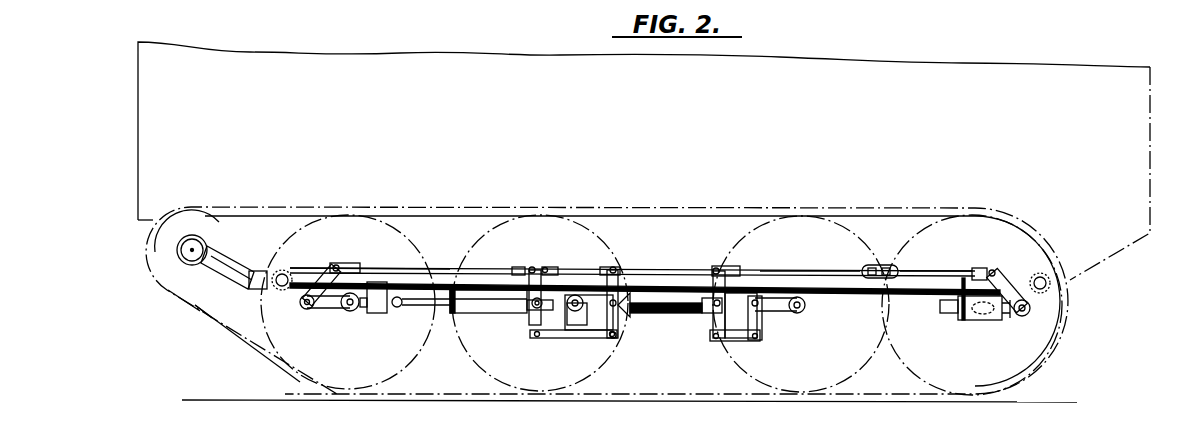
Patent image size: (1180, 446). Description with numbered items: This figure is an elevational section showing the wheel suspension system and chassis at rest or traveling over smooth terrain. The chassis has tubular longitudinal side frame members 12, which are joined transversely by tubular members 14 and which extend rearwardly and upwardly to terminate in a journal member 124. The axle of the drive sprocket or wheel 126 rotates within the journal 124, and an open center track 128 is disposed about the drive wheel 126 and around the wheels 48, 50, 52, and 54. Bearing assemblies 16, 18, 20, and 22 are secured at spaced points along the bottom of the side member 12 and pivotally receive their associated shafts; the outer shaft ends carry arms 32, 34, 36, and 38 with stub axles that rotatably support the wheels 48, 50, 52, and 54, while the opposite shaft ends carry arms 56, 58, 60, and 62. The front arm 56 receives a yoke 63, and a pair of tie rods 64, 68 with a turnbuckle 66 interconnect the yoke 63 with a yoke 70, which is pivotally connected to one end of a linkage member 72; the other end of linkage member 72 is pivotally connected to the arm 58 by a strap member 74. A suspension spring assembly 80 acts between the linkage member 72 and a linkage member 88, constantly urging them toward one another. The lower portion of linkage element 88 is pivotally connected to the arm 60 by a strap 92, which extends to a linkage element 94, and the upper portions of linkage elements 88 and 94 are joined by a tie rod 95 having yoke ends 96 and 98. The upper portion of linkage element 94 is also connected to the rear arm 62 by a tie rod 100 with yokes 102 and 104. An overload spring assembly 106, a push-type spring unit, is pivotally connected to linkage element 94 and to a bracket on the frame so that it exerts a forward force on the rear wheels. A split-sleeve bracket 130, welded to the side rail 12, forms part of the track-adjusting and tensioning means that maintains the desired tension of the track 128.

The longitudinal side frame member 12 is at (663, 268).
The tubular member 14 is at (282, 270).
The bearing assembly 16 is at (1028, 314).
The bearing assembly 18 is at (735, 304).
The bearing assembly 20 is at (577, 308).
The bearing assembly 22 is at (303, 305).
The arm 32 is at (985, 315).
The arm 34 is at (800, 312).
The arm 36 is at (540, 317).
The arm 38 is at (338, 312).
The wheel 48 is at (1018, 388).
The wheel 50 is at (812, 386).
The wheel 52 is at (532, 386).
The wheel 54 is at (345, 382).
The arm 56 is at (1003, 280).
The arm 58 is at (762, 335).
The arm 60 is at (555, 334).
The arm 62 is at (348, 312).
The yoke 63 is at (980, 267).
The tie rod 64 is at (930, 268).
The turnbuckle 66 is at (878, 265).
The tie rod 68 is at (805, 268).
The yoke 70 is at (725, 266).
The linkage member 72 is at (712, 308).
The strap member 74 is at (730, 341).
The suspension spring assembly 80 is at (655, 312).
The linkage member 88 is at (617, 334).
The strap 92 is at (611, 336).
The linkage element 94 is at (553, 312).
The tie rod 95 is at (560, 267).
The yoke end 96 is at (613, 266).
The yoke end 98 is at (535, 266).
The tie rod 100 is at (442, 268).
The yoke 102 is at (518, 267).
The yoke 104 is at (345, 263).
The overload spring assembly 106 is at (466, 322).
The journal member 124 is at (183, 262).
The drive sprocket 126 is at (168, 240).
The open center track 128 is at (212, 322).
The split-sleeve bracket 130 is at (997, 318).